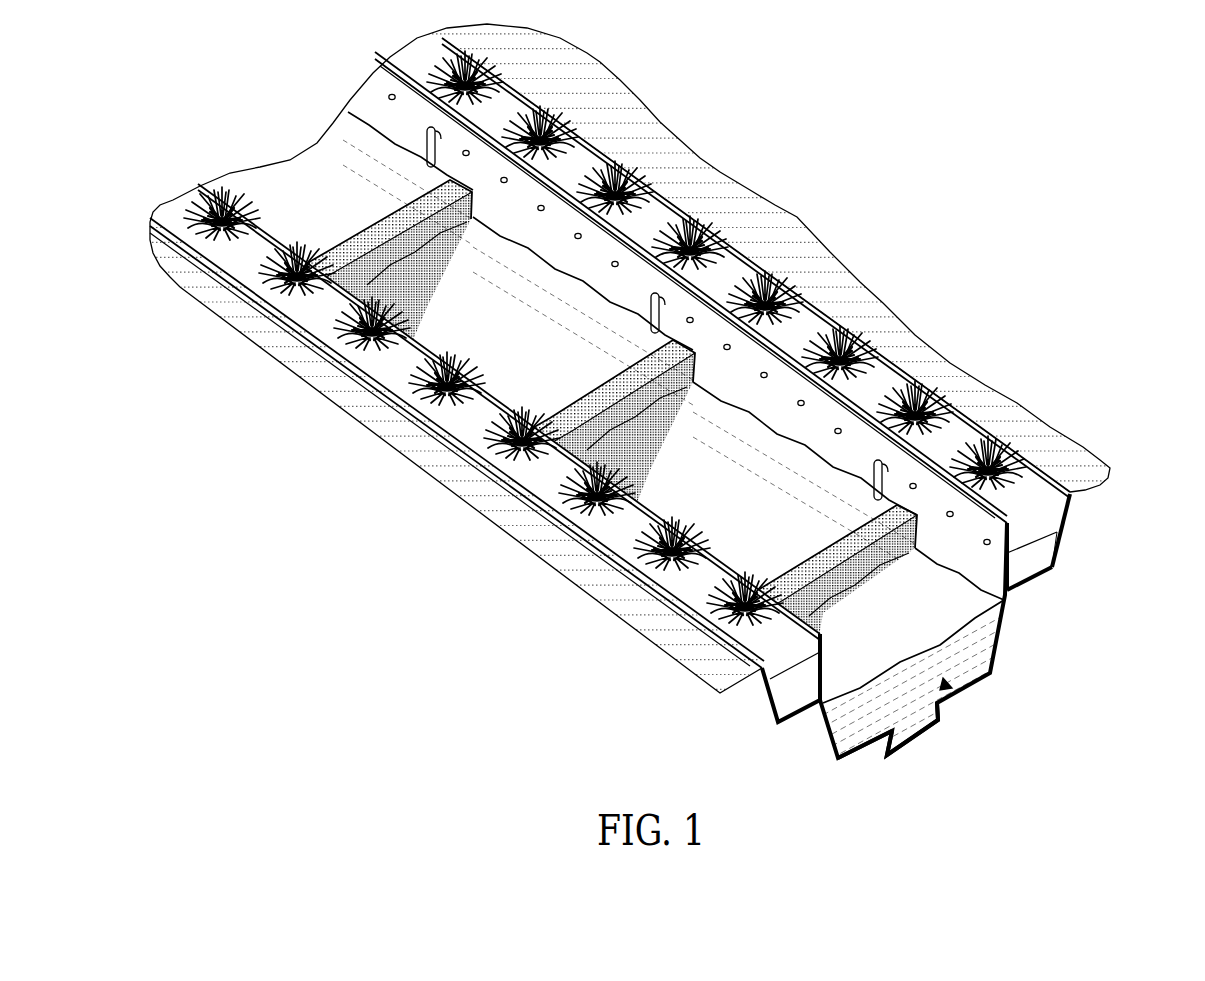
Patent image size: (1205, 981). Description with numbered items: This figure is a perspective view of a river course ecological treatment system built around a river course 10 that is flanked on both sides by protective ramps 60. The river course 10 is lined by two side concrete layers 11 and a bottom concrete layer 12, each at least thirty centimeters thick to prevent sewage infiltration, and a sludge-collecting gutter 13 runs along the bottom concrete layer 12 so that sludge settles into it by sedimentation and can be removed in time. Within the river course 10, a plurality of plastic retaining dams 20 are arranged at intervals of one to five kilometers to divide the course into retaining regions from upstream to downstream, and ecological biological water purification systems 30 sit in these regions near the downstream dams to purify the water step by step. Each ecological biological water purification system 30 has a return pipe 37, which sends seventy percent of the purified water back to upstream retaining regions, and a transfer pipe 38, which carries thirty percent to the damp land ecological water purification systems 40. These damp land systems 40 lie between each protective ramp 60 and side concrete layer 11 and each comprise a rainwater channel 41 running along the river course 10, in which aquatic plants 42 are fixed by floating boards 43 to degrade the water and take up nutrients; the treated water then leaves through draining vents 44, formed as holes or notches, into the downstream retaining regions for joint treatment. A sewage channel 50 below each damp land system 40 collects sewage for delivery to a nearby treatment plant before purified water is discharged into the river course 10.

The river course 10 is at (956, 696).
The side concrete layer 11 is at (998, 646).
The bottom concrete layer 12 is at (862, 754).
The sludge-collecting gutter 13 is at (920, 738).
The plastic retaining dam 20 is at (332, 315).
The ecological biological water purification system 30 is at (298, 226).
The return pipe 37 is at (770, 463).
The transfer pipe 38 is at (985, 505).
The damp land ecological water purification system 40 is at (1143, 383).
The rainwater channel 41 is at (1060, 526).
The aquatic plants 42 is at (1012, 445).
The floating board 43 is at (1010, 515).
The draining vent 44 is at (577, 235).
The sewage channel 50 is at (1020, 567).
The protective ramp 60 is at (717, 187).